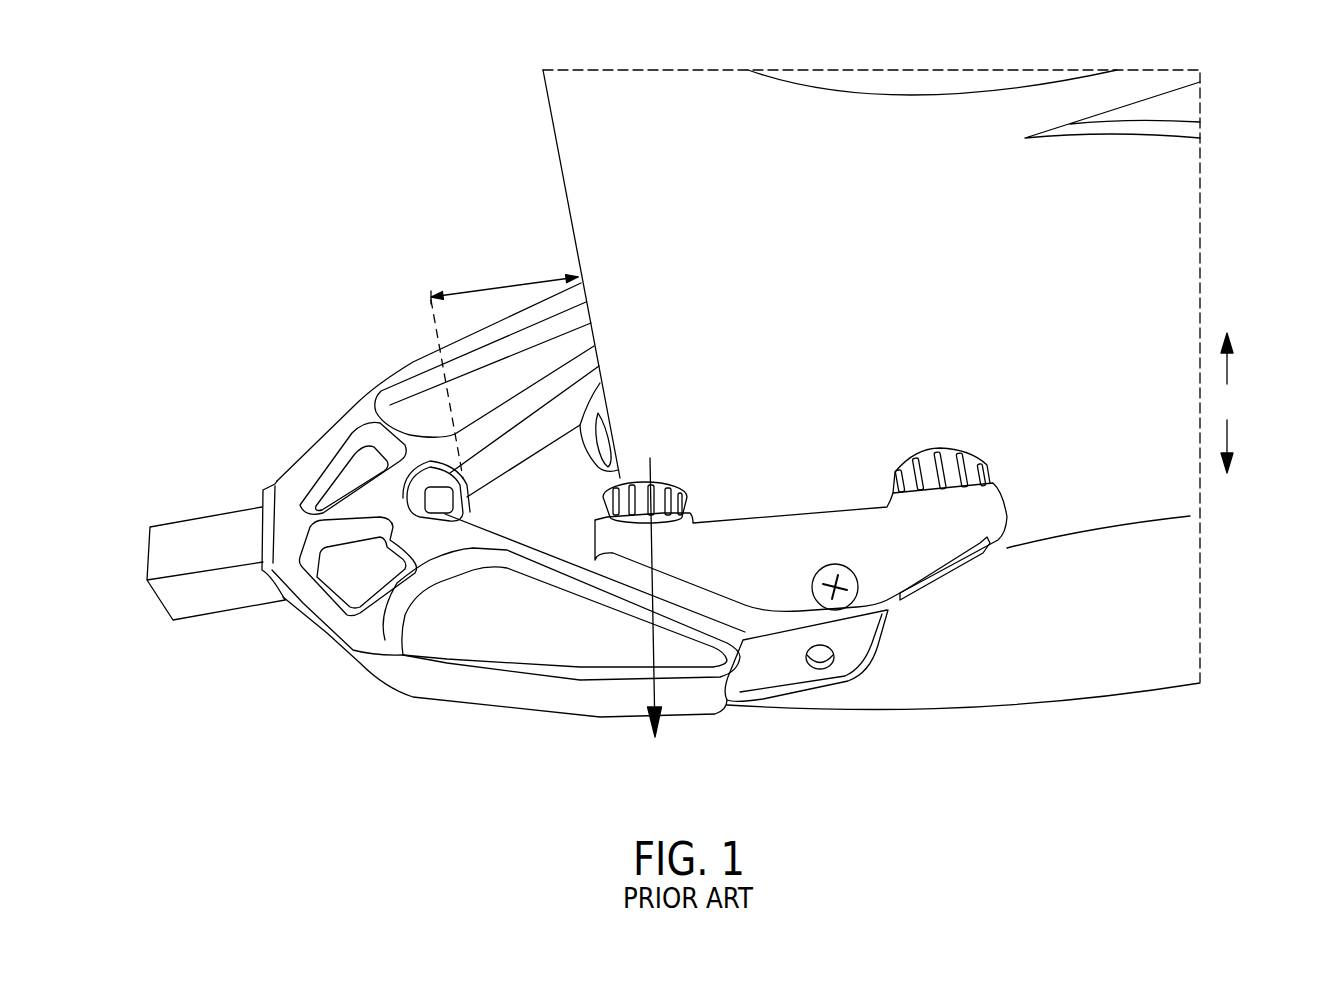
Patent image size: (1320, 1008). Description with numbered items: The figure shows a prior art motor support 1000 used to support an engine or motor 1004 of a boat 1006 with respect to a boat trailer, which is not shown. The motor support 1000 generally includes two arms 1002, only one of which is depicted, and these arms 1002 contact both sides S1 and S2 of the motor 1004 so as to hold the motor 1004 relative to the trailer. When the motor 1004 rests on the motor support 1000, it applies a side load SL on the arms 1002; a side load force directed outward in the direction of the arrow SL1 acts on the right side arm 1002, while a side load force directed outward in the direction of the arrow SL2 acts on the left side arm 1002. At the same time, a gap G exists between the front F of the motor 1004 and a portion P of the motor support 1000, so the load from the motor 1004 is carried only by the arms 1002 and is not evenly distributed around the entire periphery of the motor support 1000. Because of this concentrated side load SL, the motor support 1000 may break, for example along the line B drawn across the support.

The motor support 1000 is at (517, 541).
The arm 1002 is at (990, 500).
The motor 1004 is at (1180, 175).
The boat 1006 is at (1180, 265).
The side of the motor S1 is at (565, 136).
The side of the motor S2 is at (548, 115).
The front of the motor F is at (573, 247).
The gap G is at (487, 290).
The portion of the motor support P is at (437, 500).
The line B is at (531, 502).
The side load SL is at (657, 650).
The arrow SL1 is at (1253, 446).
The arrow SL2 is at (1253, 358).